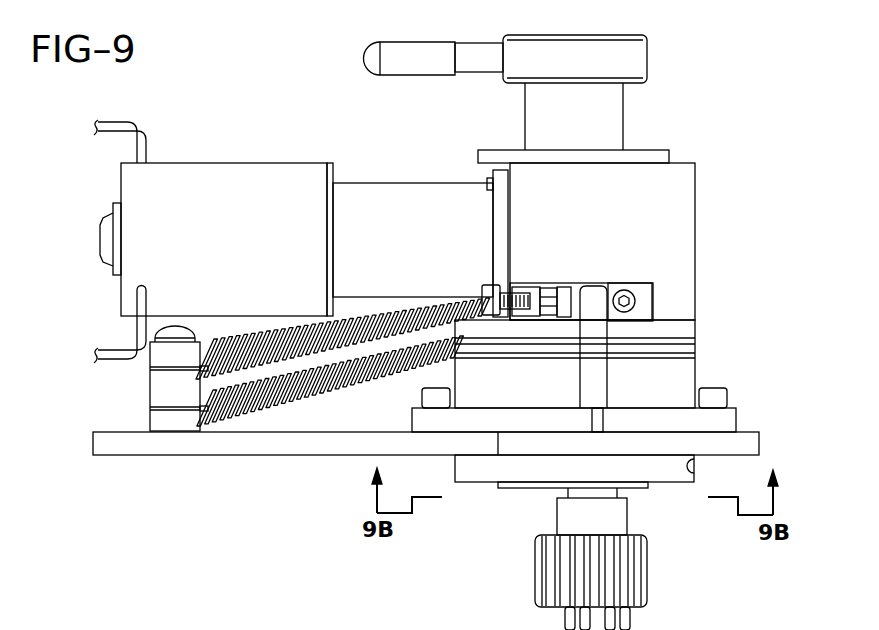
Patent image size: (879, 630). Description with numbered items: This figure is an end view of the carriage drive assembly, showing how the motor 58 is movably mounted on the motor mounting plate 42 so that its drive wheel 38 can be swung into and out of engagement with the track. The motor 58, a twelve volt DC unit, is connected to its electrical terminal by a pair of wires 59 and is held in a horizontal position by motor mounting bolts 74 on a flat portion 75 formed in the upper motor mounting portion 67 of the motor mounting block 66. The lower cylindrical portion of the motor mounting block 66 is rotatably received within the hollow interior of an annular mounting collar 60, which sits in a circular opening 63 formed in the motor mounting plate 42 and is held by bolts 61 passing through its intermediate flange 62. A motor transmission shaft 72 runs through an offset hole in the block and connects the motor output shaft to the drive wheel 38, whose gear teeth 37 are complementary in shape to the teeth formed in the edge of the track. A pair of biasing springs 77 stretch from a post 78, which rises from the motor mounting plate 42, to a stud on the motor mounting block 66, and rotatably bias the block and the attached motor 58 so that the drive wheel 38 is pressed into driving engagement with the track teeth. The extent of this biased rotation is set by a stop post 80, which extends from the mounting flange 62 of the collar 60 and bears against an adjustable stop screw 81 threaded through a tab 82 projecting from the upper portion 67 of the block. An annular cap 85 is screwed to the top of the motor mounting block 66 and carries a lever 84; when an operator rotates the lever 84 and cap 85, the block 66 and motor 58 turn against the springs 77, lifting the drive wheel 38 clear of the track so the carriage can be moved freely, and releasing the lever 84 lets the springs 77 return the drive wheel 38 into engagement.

The gear teeth 37 is at (635, 560).
The drive wheel 38 is at (648, 588).
The motor mounting plate 42 is at (228, 445).
The motor 58 is at (426, 249).
The wires 59 is at (146, 130).
The annular mounting collar 60 is at (478, 472).
The bolts 61 is at (425, 396).
The intermediate flange 62 is at (738, 418).
The circular opening 63 is at (694, 468).
The motor mounting block 66 is at (697, 295).
The upper motor mounting portion 67 is at (695, 183).
The motor transmission shaft 72 is at (614, 490).
The motor mounting bolts 74 is at (487, 181).
The flat portion 75 is at (508, 212).
The biasing springs 77 is at (300, 404).
The post 78 is at (166, 395).
The stop post 80 is at (592, 292).
The adjustable stop screw 81 is at (486, 292).
The tab 82 is at (566, 290).
The lever 84 is at (418, 62).
The annular cap 85 is at (634, 57).